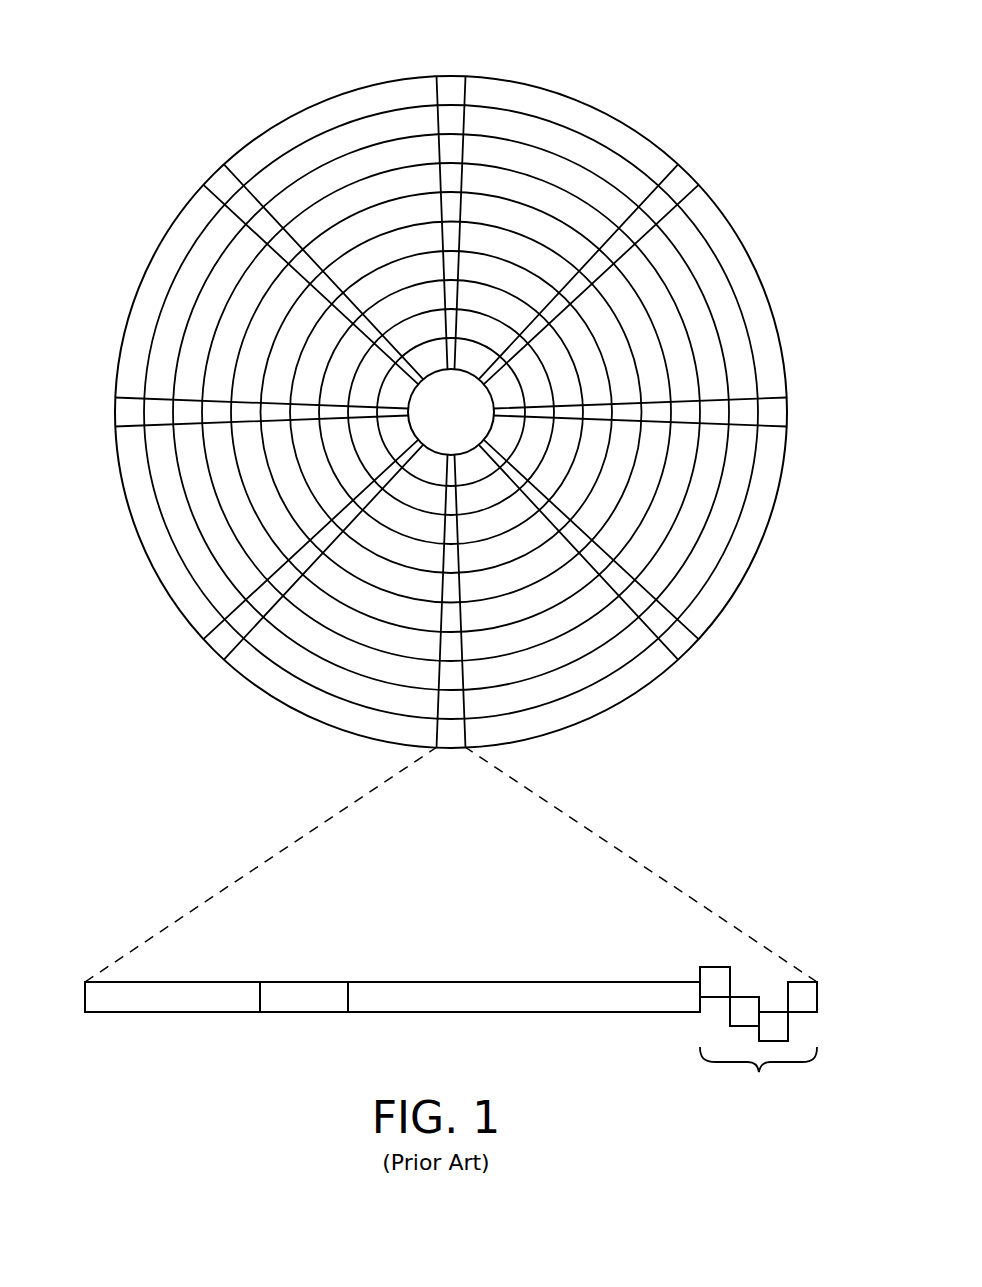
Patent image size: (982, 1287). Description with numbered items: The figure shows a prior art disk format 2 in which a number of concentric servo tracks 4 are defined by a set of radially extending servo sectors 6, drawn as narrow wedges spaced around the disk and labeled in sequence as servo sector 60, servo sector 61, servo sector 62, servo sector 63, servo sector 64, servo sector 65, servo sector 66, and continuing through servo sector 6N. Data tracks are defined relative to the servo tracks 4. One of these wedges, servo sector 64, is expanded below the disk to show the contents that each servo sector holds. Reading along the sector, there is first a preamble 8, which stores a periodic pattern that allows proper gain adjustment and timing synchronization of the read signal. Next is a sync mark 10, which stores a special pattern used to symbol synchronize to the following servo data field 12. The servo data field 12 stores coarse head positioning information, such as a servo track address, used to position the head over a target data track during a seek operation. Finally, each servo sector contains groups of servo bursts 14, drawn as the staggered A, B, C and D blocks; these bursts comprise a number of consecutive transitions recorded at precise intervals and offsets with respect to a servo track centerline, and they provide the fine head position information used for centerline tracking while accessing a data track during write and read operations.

The disk format 2 is at (451, 424).
The servo tracks 4 is at (590, 125).
The servo sectors 6 is at (451, 424).
The servo sector 60 is at (452, 85).
The servo sector 61 is at (681, 182).
The servo sector 62 is at (780, 412).
The servo sector 63 is at (681, 640).
The servo sector 64 is at (300, 822).
The servo sector 65 is at (219, 643).
The servo sector 66 is at (122, 411).
The servo sector 6N is at (285, 250).
The preamble 8 is at (153, 1013).
The sync mark 10 is at (300, 1013).
The servo data field 12 is at (512, 1006).
The servo bursts 14 is at (680, 943).